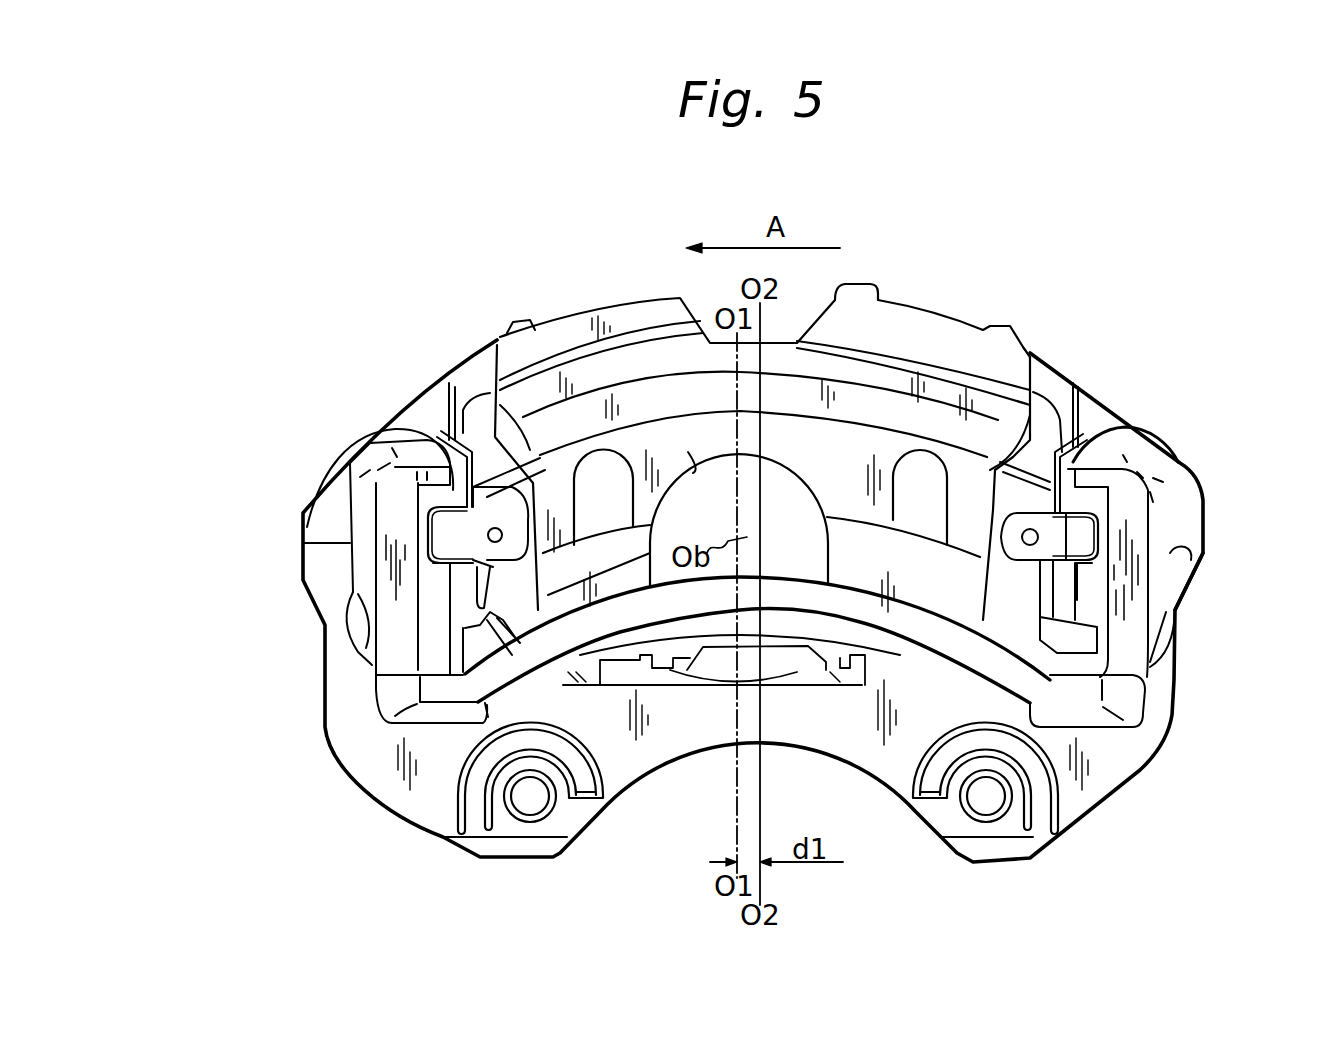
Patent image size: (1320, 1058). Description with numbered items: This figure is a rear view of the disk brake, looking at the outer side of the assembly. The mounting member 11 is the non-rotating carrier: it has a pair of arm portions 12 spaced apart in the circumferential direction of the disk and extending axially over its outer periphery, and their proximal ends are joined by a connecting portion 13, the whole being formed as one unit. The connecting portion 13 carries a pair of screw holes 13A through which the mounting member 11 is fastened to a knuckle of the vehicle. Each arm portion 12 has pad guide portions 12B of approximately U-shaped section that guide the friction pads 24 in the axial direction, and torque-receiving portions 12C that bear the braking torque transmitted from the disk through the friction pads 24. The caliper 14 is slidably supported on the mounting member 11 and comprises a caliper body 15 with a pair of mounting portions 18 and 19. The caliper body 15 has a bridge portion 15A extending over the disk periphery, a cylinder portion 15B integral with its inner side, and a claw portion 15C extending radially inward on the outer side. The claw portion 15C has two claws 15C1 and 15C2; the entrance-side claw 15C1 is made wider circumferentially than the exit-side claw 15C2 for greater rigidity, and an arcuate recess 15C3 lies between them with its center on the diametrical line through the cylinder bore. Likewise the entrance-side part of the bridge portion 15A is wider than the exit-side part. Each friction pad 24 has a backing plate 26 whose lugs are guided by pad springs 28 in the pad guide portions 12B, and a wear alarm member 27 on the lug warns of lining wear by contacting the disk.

The mounting member 11 is at (447, 836).
The arm portion 12 is at (380, 447).
The pad guide portion 12B is at (1085, 535).
The torque-receiving portion 12C is at (450, 582).
The connecting portion 13 is at (905, 790).
The screw hole 13A is at (538, 790).
The caliper 14 is at (524, 323).
The caliper body 15 is at (570, 315).
The bridge portion 15A is at (885, 363).
The cylinder portion 15B is at (625, 315).
The claw portion 15C is at (877, 445).
The claw 15C1 is at (920, 590).
The claw 15C2 is at (613, 587).
The arcuate recess 15C3 is at (700, 462).
The mounting portion 18 is at (1058, 376).
The mounting portion 19 is at (465, 382).
The friction pad 24 is at (1007, 607).
The backing plate 26 is at (470, 527).
The wear alarm member 27 is at (1070, 517).
The pad spring 28 is at (478, 600).